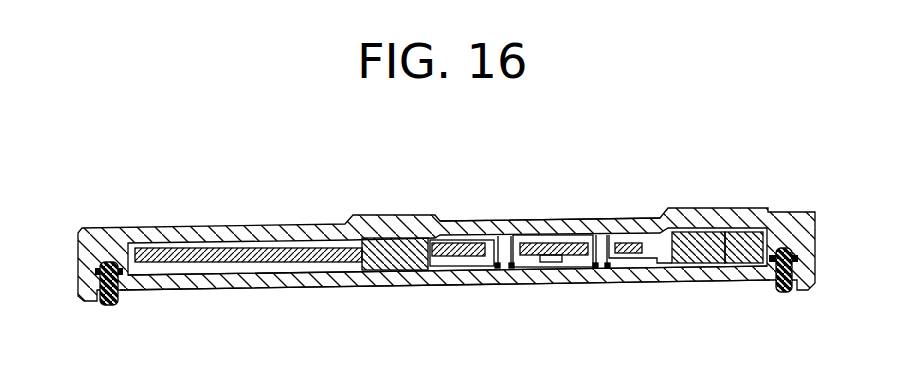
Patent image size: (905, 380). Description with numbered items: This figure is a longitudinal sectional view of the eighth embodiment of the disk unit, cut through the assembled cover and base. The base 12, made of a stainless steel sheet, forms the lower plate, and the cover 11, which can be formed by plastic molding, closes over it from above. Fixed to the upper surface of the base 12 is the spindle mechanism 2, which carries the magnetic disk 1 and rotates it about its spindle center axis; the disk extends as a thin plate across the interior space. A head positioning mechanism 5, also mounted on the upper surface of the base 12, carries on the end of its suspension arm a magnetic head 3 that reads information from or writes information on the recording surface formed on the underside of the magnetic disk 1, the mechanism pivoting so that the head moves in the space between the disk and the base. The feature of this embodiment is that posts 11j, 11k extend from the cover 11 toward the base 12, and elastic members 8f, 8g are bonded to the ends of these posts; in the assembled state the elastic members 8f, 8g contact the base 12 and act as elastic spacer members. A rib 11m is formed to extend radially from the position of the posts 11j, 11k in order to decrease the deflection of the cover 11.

The cover 11 is at (225, 226).
The base 12 is at (247, 280).
The magnetic disk 1 is at (265, 249).
The spindle mechanism 2 is at (377, 273).
The magnetic head 3 is at (540, 270).
The head positioning mechanism 5 is at (688, 255).
The elastic member 8f is at (505, 268).
The elastic member 8g is at (602, 268).
The post 11j is at (497, 250).
The rib 11m is at (553, 219).
The post 11k is at (607, 219).